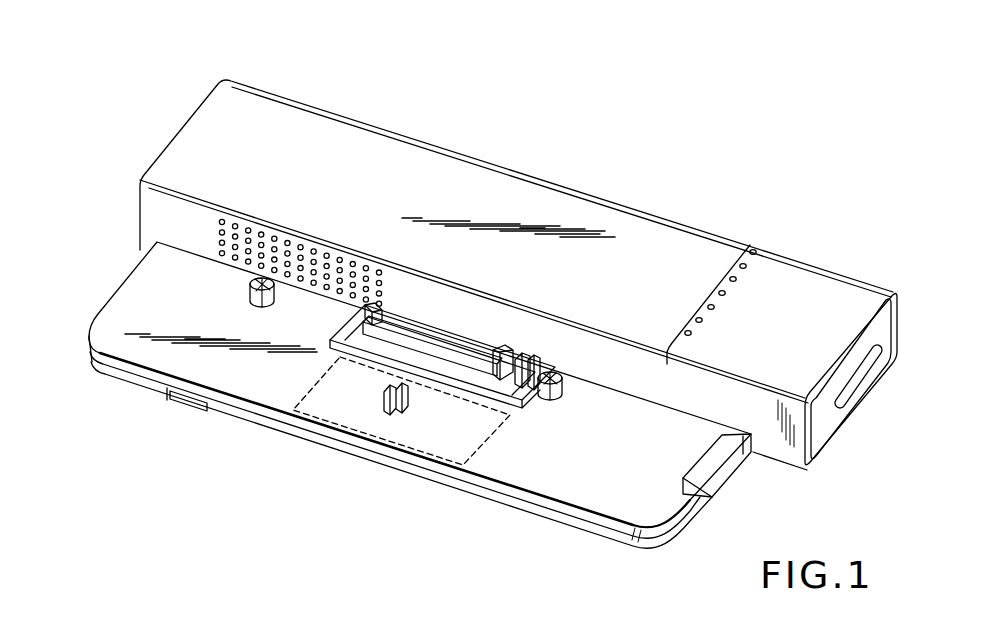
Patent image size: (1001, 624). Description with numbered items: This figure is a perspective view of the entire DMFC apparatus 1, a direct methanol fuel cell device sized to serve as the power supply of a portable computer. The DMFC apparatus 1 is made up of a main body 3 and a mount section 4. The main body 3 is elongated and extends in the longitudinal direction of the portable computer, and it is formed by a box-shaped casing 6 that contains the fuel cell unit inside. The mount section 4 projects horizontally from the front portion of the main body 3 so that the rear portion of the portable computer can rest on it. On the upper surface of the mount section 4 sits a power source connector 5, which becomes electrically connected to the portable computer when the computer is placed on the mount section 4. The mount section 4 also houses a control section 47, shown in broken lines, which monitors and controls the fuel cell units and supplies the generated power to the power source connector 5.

The DMFC apparatus 1 is at (583, 78).
The main body 3 is at (448, 174).
The mount section 4 is at (257, 378).
The power source connector 5 is at (467, 348).
The casing 6 is at (589, 223).
The control section 47 is at (497, 437).